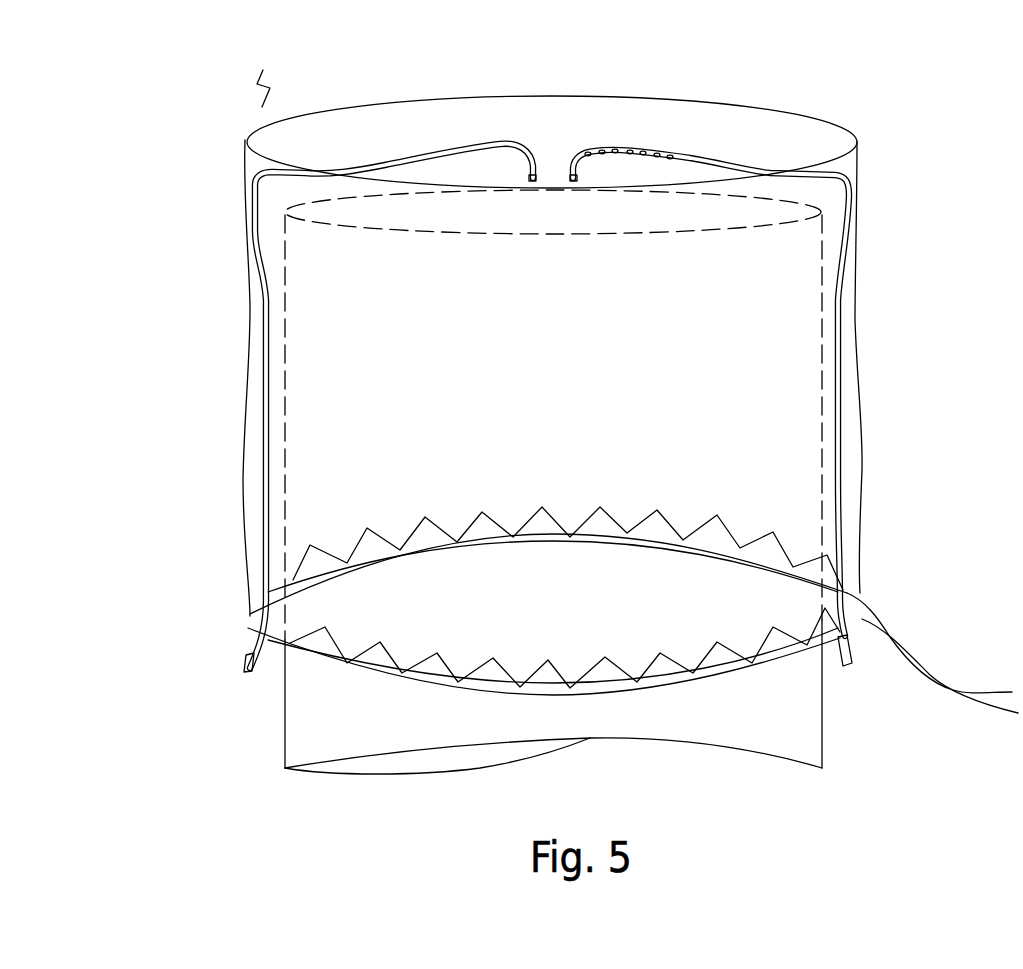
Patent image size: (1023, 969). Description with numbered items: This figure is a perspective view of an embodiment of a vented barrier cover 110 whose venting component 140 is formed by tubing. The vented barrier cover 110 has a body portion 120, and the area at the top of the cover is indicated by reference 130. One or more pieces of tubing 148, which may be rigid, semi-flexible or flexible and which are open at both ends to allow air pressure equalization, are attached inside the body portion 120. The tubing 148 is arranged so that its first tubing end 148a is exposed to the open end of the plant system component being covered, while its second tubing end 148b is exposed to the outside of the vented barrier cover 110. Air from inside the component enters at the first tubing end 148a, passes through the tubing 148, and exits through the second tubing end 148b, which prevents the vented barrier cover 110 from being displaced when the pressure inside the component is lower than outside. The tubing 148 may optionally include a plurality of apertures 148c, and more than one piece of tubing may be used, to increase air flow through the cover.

The vented barrier cover 110 is at (253, 76).
The body portion 120 is at (245, 466).
The top portion 130 is at (787, 128).
The venting component 140 is at (520, 143).
The tubing 148 is at (265, 313).
The first tubing end 148a is at (531, 181).
The second tubing end 148b is at (248, 668).
The apertures 148c is at (588, 151).